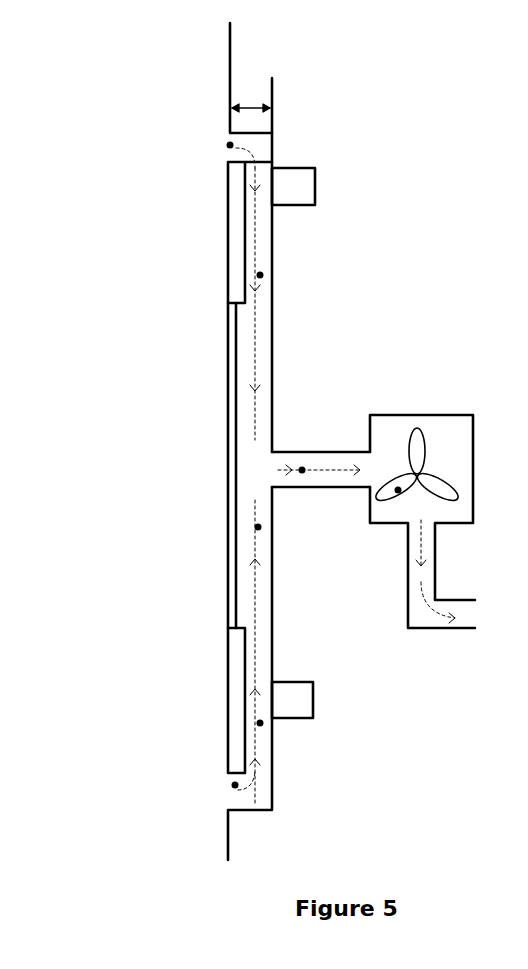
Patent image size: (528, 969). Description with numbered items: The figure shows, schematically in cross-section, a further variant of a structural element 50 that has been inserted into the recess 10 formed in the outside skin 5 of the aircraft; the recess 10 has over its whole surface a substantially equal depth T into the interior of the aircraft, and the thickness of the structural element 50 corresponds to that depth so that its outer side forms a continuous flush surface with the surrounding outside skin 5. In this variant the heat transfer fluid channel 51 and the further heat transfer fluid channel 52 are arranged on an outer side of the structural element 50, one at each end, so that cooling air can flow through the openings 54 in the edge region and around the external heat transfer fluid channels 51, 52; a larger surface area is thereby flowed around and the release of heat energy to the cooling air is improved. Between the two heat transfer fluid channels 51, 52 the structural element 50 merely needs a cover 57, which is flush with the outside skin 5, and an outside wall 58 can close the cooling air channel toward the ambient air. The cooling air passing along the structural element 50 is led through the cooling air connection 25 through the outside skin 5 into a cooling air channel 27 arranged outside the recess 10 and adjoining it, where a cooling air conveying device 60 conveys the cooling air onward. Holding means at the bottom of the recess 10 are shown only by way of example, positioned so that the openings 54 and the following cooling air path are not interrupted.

The outside skin 5 is at (228, 52).
The depth T is at (252, 100).
The recess 10 is at (287, 145).
The cooling air connection 25 is at (304, 468).
The cooling air channel 27 is at (353, 447).
The structural element 50 is at (209, 240).
The heat transfer fluid channel 51 is at (232, 693).
The further heat transfer fluid channel 52 is at (233, 286).
The openings 54 is at (228, 146).
The cover 57 is at (228, 430).
The outside wall 58 is at (202, 467).
The cooling air conveying device 60 is at (396, 492).